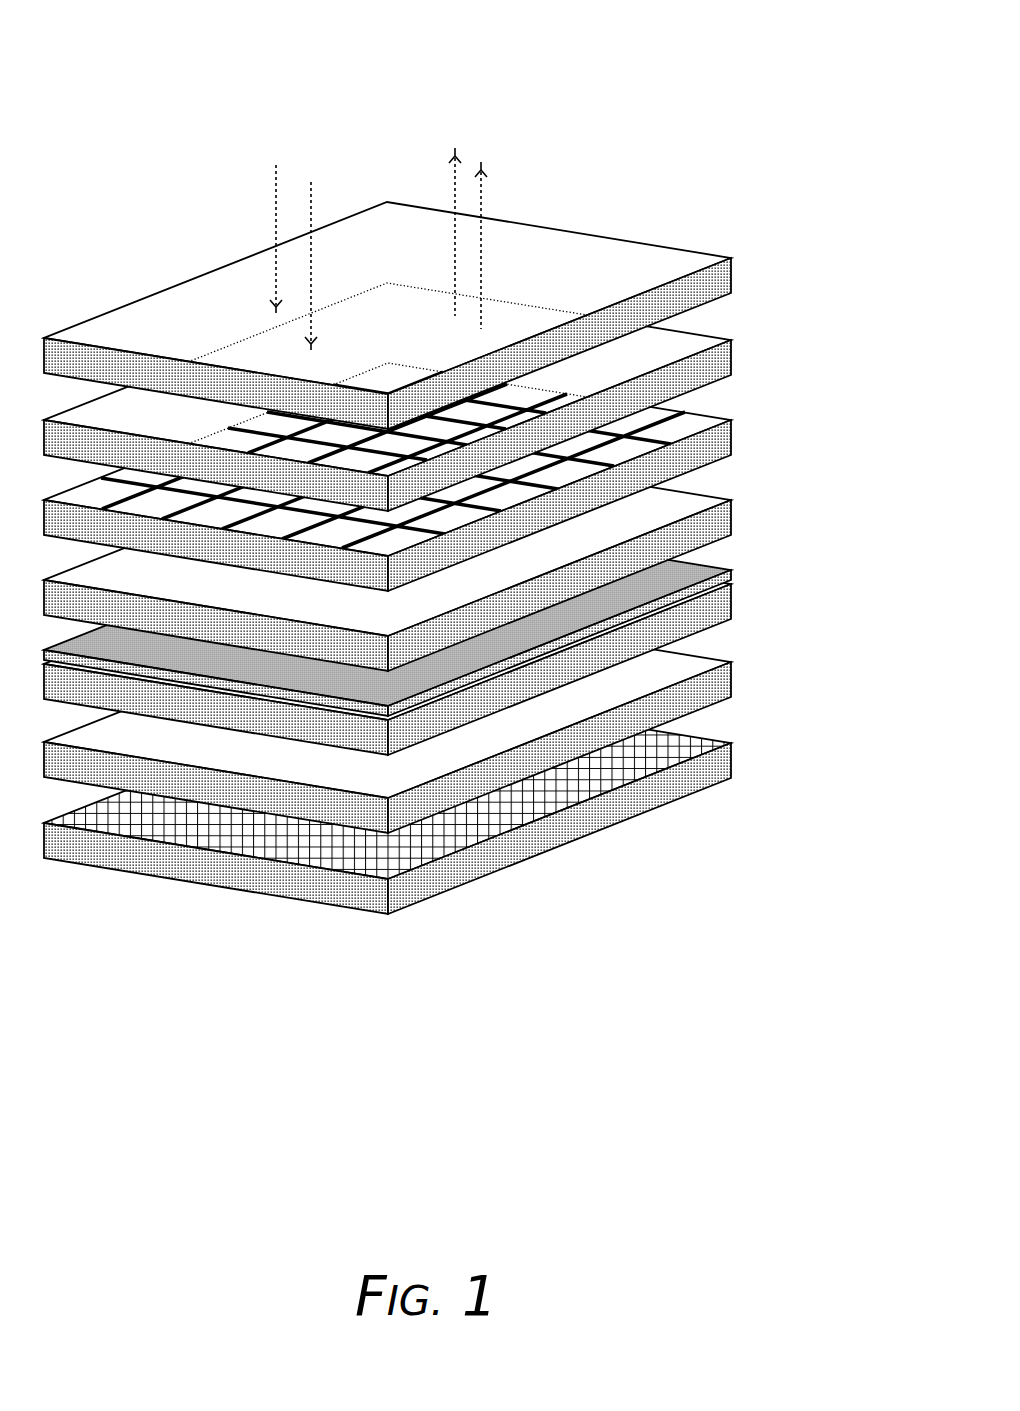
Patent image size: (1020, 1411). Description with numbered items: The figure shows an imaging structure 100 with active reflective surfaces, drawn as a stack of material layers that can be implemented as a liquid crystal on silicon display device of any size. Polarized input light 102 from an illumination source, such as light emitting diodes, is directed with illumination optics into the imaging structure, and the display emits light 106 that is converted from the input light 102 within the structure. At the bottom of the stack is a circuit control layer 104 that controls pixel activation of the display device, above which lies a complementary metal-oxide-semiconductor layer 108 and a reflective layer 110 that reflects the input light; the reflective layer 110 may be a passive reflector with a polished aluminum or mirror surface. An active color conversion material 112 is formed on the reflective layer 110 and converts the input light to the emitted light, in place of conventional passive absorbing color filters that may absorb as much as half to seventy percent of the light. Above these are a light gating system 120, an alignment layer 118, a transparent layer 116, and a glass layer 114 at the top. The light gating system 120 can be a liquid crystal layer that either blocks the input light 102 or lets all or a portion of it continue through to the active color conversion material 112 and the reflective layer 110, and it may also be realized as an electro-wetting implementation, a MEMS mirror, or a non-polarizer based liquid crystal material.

The imaging structure 100 is at (656, 58).
The input light 102 is at (258, 203).
The circuit control layer 104 is at (720, 770).
The emitted light 106 is at (541, 196).
The complementary metal-oxide-semiconductor (CMOS) layer 108 is at (720, 690).
The reflective layer 110 is at (720, 608).
The active color conversion material 112 is at (724, 581).
The glass layer 114 is at (719, 285).
The transparent layer 116 is at (719, 367).
The alignment layer 118 is at (719, 447).
The light gating system 120 is at (719, 527).